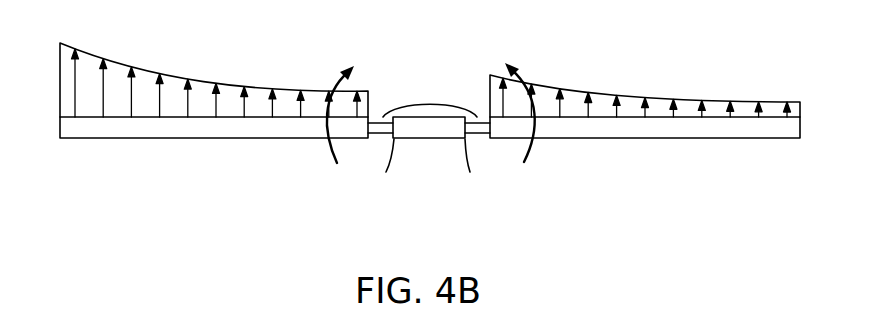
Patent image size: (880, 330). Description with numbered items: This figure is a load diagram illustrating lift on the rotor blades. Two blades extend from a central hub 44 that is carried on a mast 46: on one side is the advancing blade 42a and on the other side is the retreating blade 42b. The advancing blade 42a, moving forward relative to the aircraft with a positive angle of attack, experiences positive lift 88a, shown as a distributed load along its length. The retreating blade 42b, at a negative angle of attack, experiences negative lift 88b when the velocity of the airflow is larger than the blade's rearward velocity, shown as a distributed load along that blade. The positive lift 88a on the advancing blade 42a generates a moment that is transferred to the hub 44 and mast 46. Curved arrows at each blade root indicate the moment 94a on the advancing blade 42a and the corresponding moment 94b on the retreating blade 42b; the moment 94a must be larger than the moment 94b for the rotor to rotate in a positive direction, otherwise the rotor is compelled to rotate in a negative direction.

The advancing blade 42a is at (195, 141).
The retreating blade 42b is at (618, 138).
The hub 44 is at (423, 108).
The mast 46 is at (460, 150).
The positive lift 88a is at (142, 83).
The negative lift 88b is at (602, 95).
The moment 94a is at (337, 85).
The moment 94b is at (498, 85).